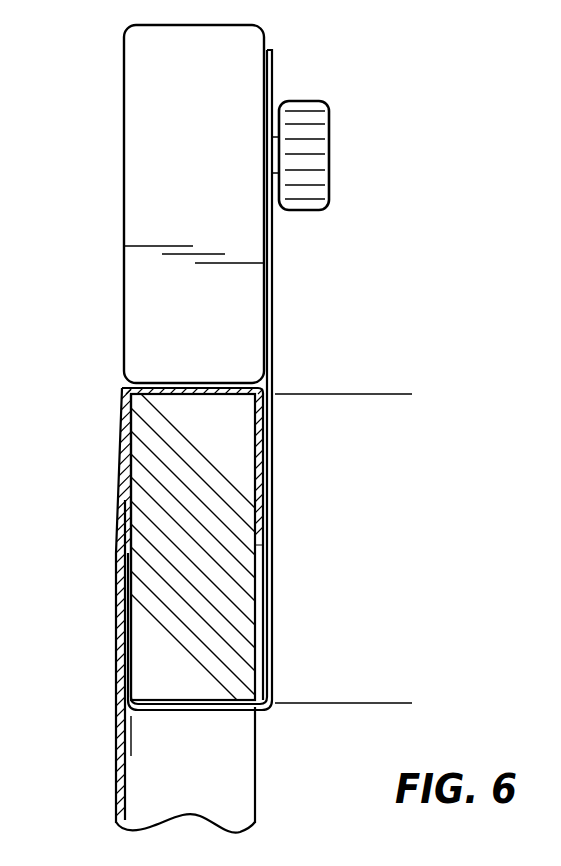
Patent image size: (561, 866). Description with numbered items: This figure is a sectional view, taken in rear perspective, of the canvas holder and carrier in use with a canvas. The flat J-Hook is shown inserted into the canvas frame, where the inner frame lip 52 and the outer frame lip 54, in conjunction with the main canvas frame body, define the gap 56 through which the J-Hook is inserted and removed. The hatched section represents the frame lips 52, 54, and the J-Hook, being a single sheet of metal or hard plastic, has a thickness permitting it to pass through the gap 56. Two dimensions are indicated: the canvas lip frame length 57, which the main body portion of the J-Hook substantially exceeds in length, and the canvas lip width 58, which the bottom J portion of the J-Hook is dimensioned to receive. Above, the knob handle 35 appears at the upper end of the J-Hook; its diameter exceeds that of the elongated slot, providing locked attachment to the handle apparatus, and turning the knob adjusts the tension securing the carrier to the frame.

The knob handle 35 is at (329, 147).
The inner frame lip 52 is at (120, 568).
The outer frame lip 54 is at (255, 575).
The gap 56 is at (123, 542).
The canvas lip frame length 57 is at (392, 394).
The canvas lip width 58 is at (255, 743).